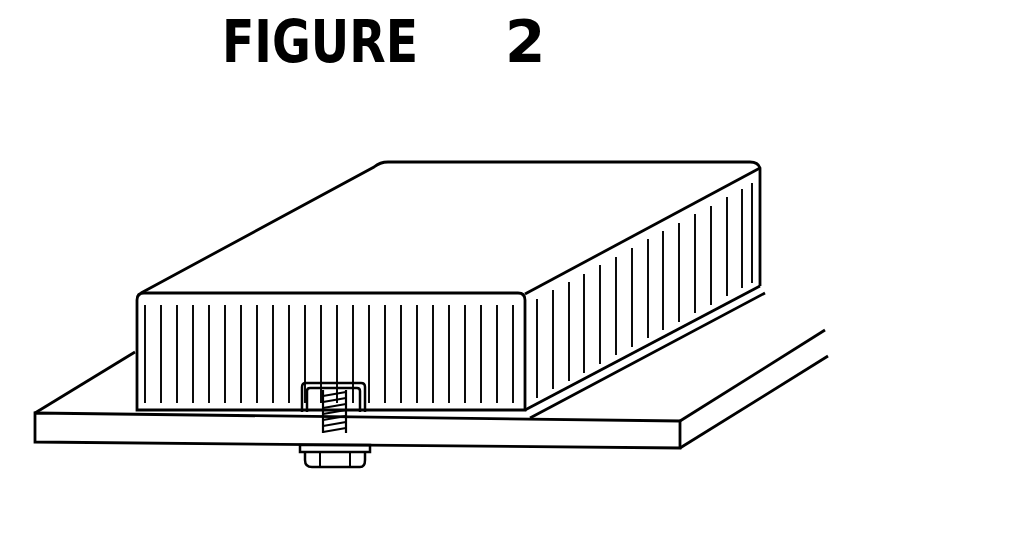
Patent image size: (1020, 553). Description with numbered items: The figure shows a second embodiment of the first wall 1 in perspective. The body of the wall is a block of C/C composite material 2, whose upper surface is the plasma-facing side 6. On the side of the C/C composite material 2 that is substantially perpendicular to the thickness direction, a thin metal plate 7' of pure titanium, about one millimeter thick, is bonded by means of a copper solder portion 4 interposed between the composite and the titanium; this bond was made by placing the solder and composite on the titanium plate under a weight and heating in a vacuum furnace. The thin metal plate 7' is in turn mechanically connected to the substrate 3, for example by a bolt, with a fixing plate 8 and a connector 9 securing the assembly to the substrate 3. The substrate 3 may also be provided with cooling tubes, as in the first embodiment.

The heat sink assembly 1 is at (234, 236).
The C/C composite material 2 is at (728, 217).
The substrate 3 is at (607, 432).
The solder portion 4 is at (713, 290).
The plasma-facing side 6 is at (543, 207).
The thin metal plate 7' is at (684, 338).
The fixing plate 8 is at (317, 401).
The connector 9 is at (333, 468).